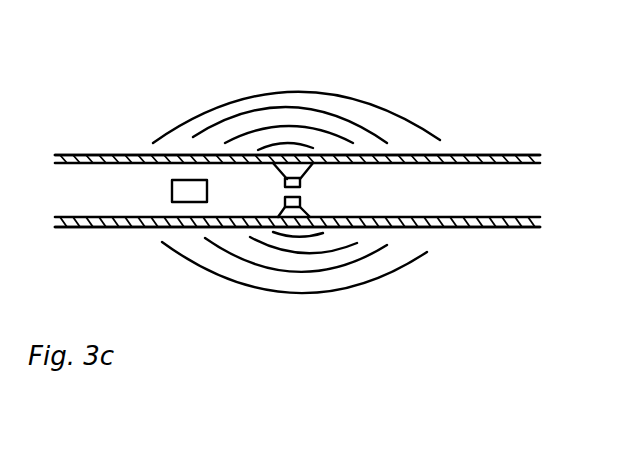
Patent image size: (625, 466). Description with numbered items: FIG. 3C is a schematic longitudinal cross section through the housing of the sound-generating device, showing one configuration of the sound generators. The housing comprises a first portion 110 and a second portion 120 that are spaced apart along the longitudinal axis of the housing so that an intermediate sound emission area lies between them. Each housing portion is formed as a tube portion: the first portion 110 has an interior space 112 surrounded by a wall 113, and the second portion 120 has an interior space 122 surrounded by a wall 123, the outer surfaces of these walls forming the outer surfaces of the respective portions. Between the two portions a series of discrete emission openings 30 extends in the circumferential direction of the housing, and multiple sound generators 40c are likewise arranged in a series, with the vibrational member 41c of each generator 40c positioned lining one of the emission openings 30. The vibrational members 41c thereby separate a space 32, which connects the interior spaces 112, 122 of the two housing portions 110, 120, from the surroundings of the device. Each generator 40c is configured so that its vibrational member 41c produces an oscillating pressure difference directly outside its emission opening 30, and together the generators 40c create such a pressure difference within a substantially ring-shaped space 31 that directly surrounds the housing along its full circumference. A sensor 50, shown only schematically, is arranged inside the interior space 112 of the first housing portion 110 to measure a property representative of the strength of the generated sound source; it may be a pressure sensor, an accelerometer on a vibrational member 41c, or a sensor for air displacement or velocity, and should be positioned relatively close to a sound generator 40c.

The first portion 110 is at (96, 253).
The interior space 112 is at (88, 181).
The wall 113 is at (110, 157).
The second portion 120 is at (483, 260).
The interior space 122 is at (480, 192).
The wall 123 is at (520, 157).
The emission opening 30 is at (290, 157).
The ring-shaped space 31 is at (316, 135).
The space 32 is at (290, 192).
The sound generator 40c is at (270, 183).
The vibrational member 41c is at (285, 172).
The sensor 50 is at (182, 180).